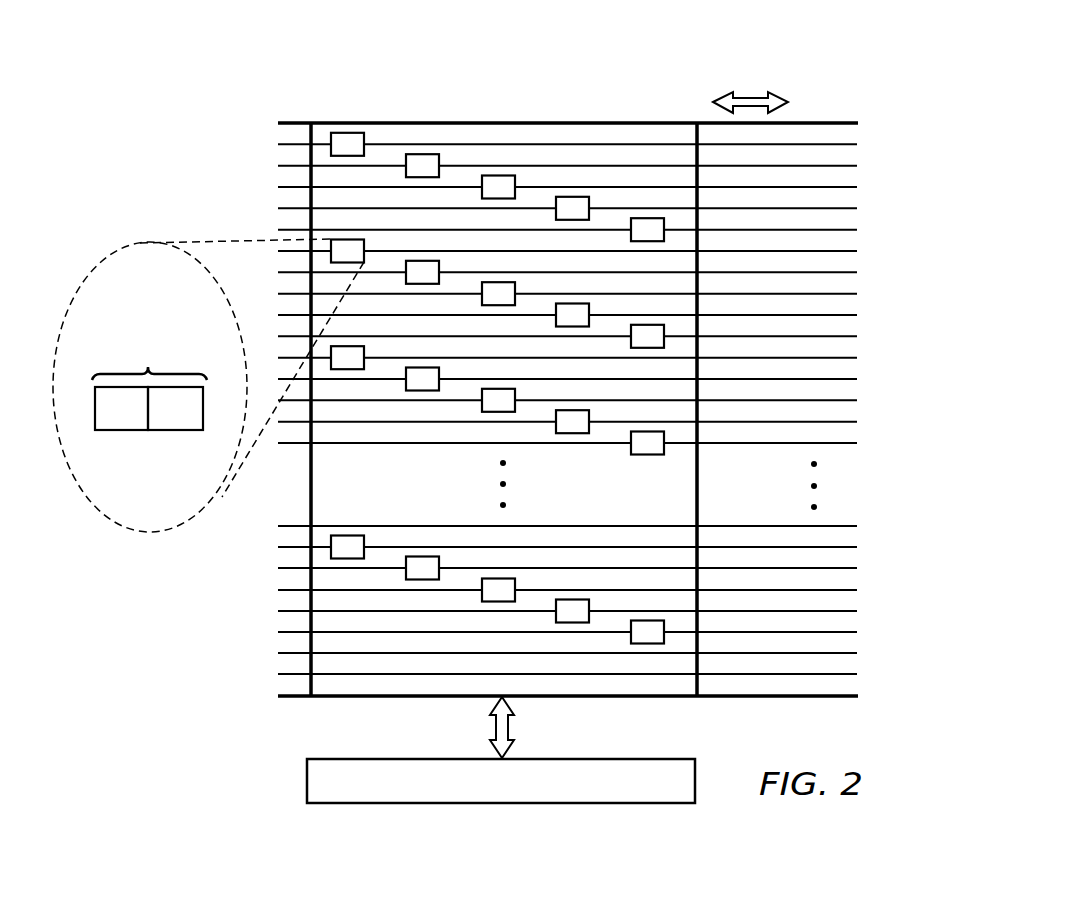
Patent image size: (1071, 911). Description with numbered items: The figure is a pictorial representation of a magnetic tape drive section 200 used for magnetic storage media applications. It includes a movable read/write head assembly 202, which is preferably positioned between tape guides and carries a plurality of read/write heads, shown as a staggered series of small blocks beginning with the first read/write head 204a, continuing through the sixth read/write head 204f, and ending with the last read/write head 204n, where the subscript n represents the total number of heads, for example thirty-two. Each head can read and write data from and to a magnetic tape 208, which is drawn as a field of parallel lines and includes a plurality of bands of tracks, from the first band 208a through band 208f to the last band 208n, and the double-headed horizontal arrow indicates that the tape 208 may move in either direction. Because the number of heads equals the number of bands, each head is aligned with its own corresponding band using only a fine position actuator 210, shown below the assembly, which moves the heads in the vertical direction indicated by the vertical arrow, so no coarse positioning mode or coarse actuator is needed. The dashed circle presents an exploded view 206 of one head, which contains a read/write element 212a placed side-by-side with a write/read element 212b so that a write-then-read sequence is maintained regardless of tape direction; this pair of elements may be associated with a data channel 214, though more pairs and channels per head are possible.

The magnetic tape drive section 200 is at (704, 71).
The read/write head assembly 202 is at (580, 122).
The read/write head 204a is at (348, 132).
The read/write head 204f is at (341, 239).
The read/write head 204n is at (643, 645).
The exploded view 206 is at (151, 323).
The magnetic tape 208 is at (861, 141).
The band 208a is at (838, 143).
The band 208f is at (787, 252).
The band 208n is at (793, 634).
The position actuator 210 is at (308, 777).
The read/write element 212a is at (120, 430).
The write/read element 212b is at (175, 430).
The data channel 214 is at (148, 411).